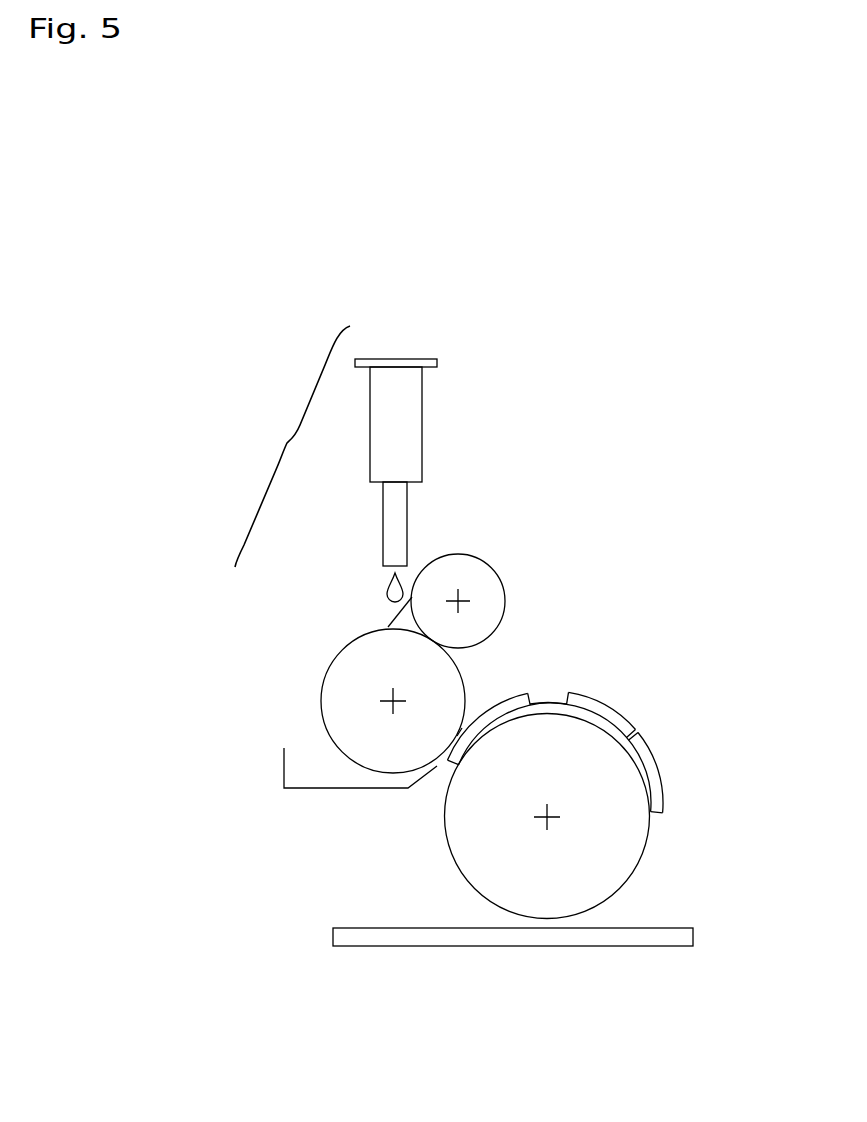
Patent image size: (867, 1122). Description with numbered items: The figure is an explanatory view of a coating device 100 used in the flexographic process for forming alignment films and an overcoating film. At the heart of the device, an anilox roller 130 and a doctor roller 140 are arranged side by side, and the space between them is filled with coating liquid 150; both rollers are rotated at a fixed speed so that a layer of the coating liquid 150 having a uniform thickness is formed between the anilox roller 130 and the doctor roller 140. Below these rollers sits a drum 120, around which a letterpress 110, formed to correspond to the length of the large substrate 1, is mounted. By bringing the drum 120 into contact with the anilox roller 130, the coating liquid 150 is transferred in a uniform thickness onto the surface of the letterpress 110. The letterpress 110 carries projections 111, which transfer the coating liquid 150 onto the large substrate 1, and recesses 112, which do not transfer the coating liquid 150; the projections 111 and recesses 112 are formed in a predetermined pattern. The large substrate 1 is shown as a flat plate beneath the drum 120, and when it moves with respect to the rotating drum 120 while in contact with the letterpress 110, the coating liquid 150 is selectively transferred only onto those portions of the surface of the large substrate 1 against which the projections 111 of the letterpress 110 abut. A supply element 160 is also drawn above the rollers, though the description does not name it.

The large substrate 1 is at (638, 933).
The coating device 100 is at (290, 446).
The letterpress 110 is at (608, 727).
The projections 111 is at (598, 697).
The recesses 112 is at (545, 698).
The drum 120 is at (600, 783).
The anilox roller 130 is at (392, 669).
The doctor roller 140 is at (504, 590).
The coating liquid 150 is at (391, 622).
The liquid supply nozzle 160 is at (422, 425).